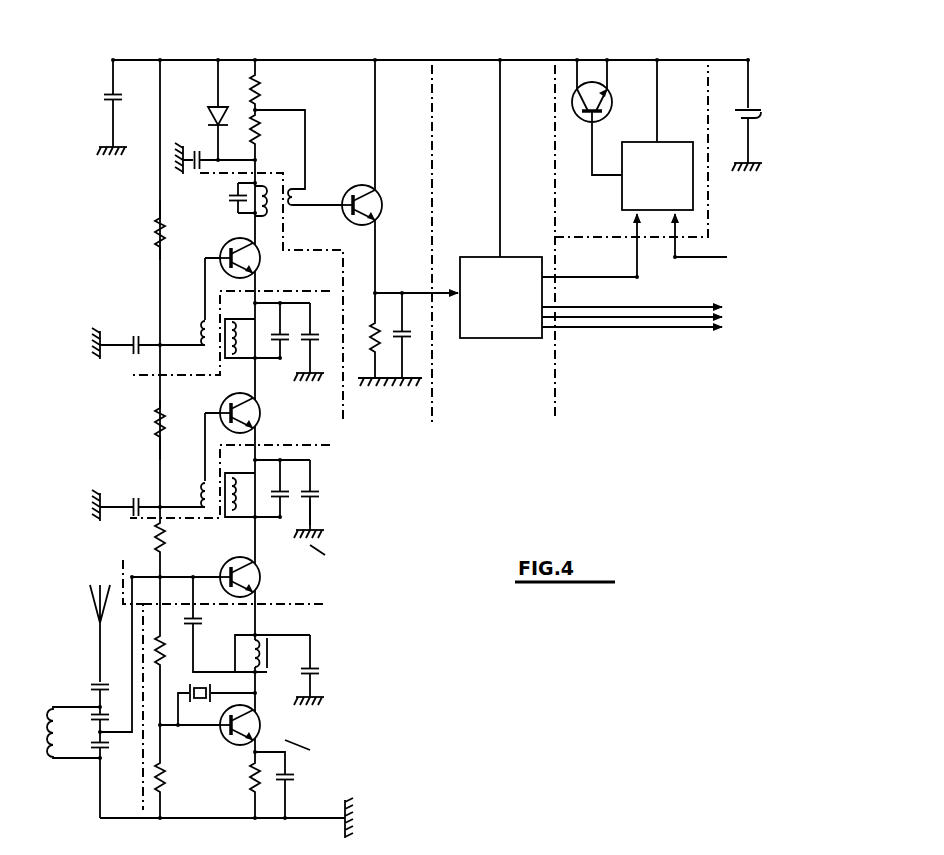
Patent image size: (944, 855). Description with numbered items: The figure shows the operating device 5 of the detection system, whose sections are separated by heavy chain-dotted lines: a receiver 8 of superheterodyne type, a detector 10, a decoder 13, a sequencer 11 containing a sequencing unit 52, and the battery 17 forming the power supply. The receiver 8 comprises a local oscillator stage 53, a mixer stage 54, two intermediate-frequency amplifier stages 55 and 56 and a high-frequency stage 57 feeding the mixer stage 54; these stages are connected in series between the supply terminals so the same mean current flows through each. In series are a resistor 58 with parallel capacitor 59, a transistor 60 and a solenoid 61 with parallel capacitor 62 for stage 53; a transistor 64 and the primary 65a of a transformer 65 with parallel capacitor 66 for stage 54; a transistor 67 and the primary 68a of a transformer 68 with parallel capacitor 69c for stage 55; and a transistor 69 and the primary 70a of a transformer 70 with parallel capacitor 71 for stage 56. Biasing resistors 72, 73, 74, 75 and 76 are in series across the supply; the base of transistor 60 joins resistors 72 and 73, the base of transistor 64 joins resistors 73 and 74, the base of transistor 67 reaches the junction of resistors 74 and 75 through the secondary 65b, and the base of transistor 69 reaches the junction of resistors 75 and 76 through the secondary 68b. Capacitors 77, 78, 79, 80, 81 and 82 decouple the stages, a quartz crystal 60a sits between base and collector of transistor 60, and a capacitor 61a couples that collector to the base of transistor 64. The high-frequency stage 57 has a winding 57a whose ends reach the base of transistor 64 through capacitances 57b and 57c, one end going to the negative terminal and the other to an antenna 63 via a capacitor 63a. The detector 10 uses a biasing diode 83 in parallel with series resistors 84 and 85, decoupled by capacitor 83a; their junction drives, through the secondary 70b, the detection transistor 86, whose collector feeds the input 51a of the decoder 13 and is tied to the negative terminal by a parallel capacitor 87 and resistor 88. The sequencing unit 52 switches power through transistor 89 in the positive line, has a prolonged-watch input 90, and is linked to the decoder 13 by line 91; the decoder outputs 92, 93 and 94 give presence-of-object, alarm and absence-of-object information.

The operating device 5 is at (357, 57).
The receiver 8 is at (334, 557).
The detector 10 is at (316, 85).
The sequencer 11 is at (683, 55).
The decoder 13 is at (500, 320).
The battery 17 is at (759, 115).
The input of the decoder 51a is at (455, 288).
The sequencing unit 52 is at (674, 150).
The local oscillator stage 53 is at (319, 748).
The mixer stage 54 is at (323, 508).
The intermediate-frequency amplifier stage 55 is at (152, 446).
The intermediate-frequency amplifier stage 56 is at (152, 229).
The high-frequency stage 57 is at (93, 817).
The winding 57a is at (45, 745).
The capacitance 57b is at (98, 712).
The capacitance 57c is at (98, 750).
The resistor 58 is at (252, 780).
The capacitor 59 is at (291, 780).
The transistor 60 is at (224, 741).
The quartz crystal 60a is at (200, 684).
The solenoid 61 is at (261, 655).
The capacitor 61a is at (190, 618).
The capacitor 62 is at (236, 653).
The antenna 63 is at (94, 603).
The capacitor 63a is at (96, 680).
The transistor 64 is at (260, 582).
The transformer 65 is at (219, 519).
The primary of transformer 65 65a is at (232, 516).
The secondary of transformer 65 65b is at (205, 485).
The capacitor 66 is at (286, 488).
The transistor 67 is at (258, 421).
The transformer 68 is at (216, 342).
The primary of transformer 68 68a is at (232, 357).
The secondary of transformer 68 68b is at (205, 322).
The transistor 69 is at (258, 265).
The capacitor 69c is at (280, 360).
The transformer 70 is at (294, 181).
The primary of transformer 70 70a is at (262, 216).
The secondary of transformer 70 70b is at (294, 210).
The capacitor 71 is at (232, 198).
The biasing resistor 72 is at (161, 780).
The biasing resistor 73 is at (161, 655).
The biasing resistor 74 is at (158, 548).
The biasing resistor 75 is at (158, 425).
The biasing resistor 76 is at (158, 240).
The decoupling capacitor 77 is at (316, 670).
The decoupling capacitor 78 is at (316, 490).
The decoupling capacitor 79 is at (143, 500).
The decoupling capacitor 80 is at (312, 340).
The decoupling capacitor 81 is at (143, 340).
The decoupling capacitor 82 is at (105, 100).
The biasing diode 83 is at (211, 118).
The capacitor 83a is at (197, 152).
The resistor 84 is at (259, 135).
The resistor 85 is at (259, 84).
The detection transistor 86 is at (377, 219).
The capacitor 87 is at (404, 330).
The resistor 88 is at (376, 318).
The transistor 89 is at (605, 112).
The input 90 is at (691, 259).
The line 91 is at (602, 278).
The output 92 is at (601, 309).
The output 93 is at (648, 319).
The output 94 is at (695, 329).